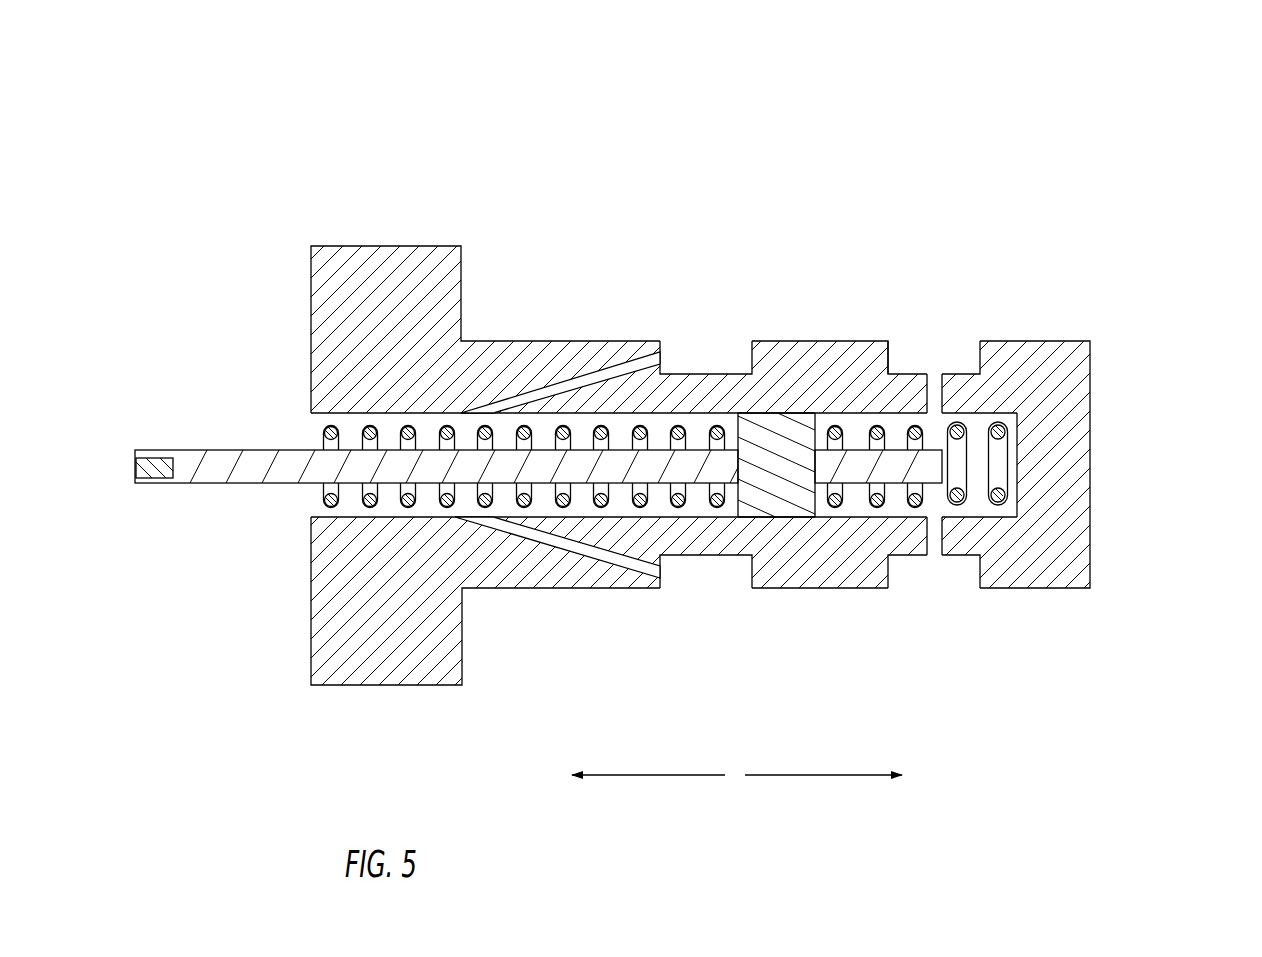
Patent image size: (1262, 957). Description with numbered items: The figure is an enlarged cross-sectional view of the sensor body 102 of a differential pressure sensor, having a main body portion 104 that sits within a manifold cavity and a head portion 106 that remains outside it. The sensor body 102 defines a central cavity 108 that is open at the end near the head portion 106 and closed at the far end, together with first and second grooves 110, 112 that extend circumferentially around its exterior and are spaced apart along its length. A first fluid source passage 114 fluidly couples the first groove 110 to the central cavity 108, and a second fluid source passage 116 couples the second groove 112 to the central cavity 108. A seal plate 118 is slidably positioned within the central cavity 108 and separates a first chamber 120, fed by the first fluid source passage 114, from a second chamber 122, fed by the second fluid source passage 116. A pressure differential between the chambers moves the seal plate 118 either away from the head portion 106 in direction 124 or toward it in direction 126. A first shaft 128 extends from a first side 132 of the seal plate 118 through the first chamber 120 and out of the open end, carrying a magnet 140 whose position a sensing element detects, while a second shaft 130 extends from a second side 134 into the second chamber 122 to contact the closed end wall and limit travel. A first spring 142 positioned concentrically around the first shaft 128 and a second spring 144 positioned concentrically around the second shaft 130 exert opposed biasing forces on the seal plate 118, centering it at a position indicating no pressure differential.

The sensor body 102 is at (292, 128).
The main body portion 104 is at (540, 588).
The head portion 106 is at (311, 293).
The central cavity 108 is at (462, 413).
The first groove 110 is at (703, 356).
The second groove 112 is at (935, 356).
The first fluid source passage 114 is at (563, 392).
The second fluid source passage 116 is at (935, 395).
The seal plate 118 is at (787, 509).
The first chamber 120 is at (387, 503).
The second chamber 122 is at (1017, 481).
The direction arrow 124 is at (785, 777).
The direction arrow 126 is at (620, 777).
The first shaft 128 is at (250, 466).
The second shaft 130 is at (872, 484).
The first side 132 is at (738, 418).
The second side 134 is at (818, 415).
The magnet 140 is at (165, 485).
The first spring 142 is at (460, 428).
The second spring 144 is at (880, 424).